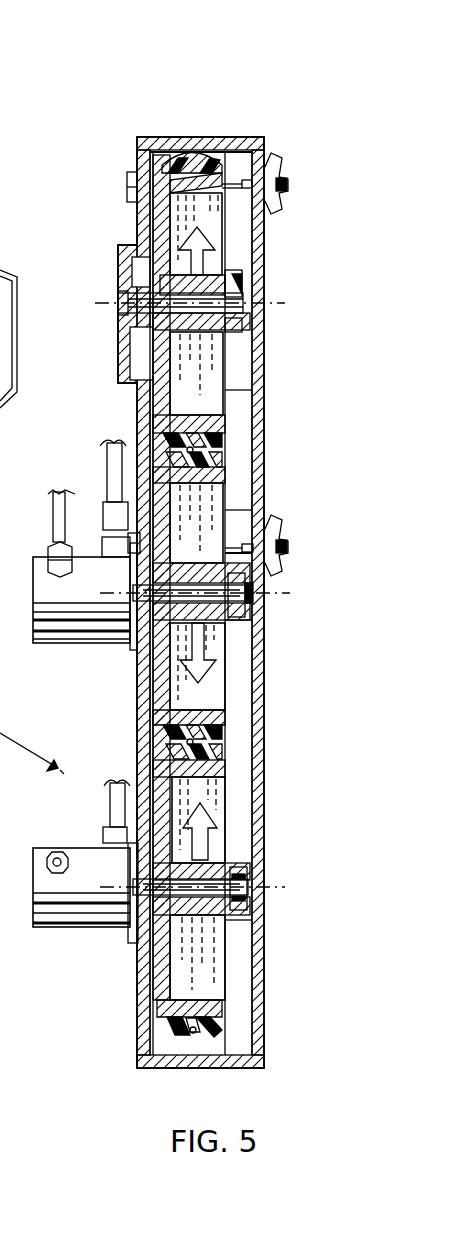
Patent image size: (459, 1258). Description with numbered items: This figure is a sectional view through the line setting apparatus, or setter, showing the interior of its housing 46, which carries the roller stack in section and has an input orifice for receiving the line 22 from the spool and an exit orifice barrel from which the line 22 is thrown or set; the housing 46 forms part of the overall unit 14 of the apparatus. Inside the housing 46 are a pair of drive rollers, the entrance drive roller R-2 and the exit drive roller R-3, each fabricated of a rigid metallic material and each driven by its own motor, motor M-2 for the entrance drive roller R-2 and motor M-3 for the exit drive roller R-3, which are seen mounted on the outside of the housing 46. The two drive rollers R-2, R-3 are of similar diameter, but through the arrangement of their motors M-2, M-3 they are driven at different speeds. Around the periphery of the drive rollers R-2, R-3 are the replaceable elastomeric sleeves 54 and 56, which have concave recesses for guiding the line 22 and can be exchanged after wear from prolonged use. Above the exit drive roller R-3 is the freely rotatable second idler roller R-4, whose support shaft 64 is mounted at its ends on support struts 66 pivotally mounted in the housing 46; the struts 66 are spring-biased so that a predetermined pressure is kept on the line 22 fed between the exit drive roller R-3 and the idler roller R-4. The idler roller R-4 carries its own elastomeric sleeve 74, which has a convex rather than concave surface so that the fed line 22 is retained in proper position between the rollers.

The housing 14 is at (138, 137).
The elastomeric sleeve 74 is at (182, 160).
The second idler roller R-4 is at (215, 187).
The housing 46 is at (137, 220).
The support shaft 64 is at (200, 273).
The support struts 66 is at (240, 267).
The line 22 is at (190, 450).
The exit drive roller R-3 is at (218, 500).
The elastomeric sleeve 56 is at (217, 717).
The entrance drive roller R-2 is at (218, 808).
The elastomeric sleeve 54 is at (233, 1022).
The motor M-3 is at (68, 640).
The motor M-2 is at (53, 930).